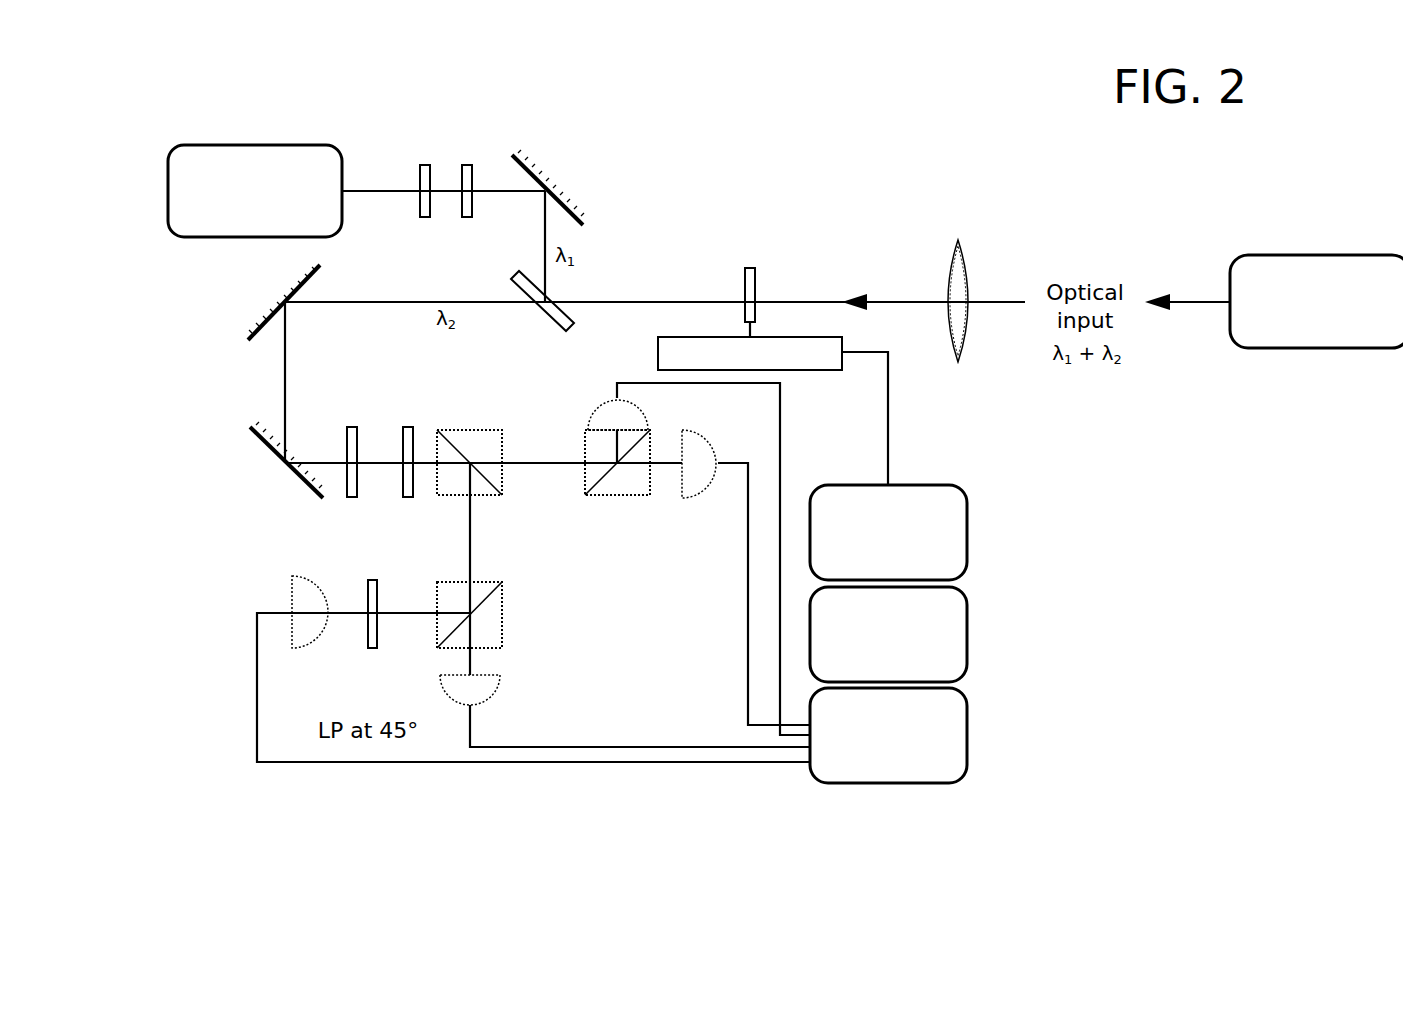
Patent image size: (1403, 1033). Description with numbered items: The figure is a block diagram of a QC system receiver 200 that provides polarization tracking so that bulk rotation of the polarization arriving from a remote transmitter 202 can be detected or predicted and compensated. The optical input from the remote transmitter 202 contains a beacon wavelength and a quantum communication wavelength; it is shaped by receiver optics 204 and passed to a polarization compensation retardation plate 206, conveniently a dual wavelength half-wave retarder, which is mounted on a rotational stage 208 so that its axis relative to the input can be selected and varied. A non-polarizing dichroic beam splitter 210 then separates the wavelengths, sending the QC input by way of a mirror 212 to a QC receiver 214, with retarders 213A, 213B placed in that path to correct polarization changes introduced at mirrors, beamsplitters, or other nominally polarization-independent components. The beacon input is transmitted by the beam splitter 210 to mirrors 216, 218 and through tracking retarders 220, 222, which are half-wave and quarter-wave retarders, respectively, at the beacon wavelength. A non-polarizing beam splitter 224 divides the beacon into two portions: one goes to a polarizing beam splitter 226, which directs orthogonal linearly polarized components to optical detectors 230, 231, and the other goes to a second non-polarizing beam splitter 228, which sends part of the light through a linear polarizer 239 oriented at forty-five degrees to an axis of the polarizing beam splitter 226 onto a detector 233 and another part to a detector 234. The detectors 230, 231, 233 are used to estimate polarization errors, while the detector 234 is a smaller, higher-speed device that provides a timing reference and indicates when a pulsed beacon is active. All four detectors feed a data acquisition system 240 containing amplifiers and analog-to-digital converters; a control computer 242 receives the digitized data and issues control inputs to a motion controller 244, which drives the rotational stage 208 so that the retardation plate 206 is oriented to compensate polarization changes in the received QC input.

The QC system receiver 200 is at (925, 130).
The remote transmitter 202 is at (1274, 301).
The receiver optics 204 is at (997, 291).
The polarization compensation retardation plate 206 is at (787, 277).
The rotational stage 208 is at (750, 383).
The non-polarizing dichroic beam splitter 210 is at (528, 323).
The mirror 212 is at (565, 178).
The retarder 213A is at (407, 195).
The retarder 213B is at (491, 205).
The QC receiver 214 is at (275, 172).
The mirror 216 is at (246, 302).
The mirror 218 is at (263, 460).
The tracking retarder 220 is at (353, 476).
The tracking retarder 222 is at (410, 476).
The non-polarizing beam splitter 224 is at (502, 439).
The polarizing beam splitter 226 is at (609, 508).
The non-polarizing beam splitter 228 is at (518, 636).
The optical detector 230 is at (650, 413).
The optical detector 231 is at (707, 497).
The detector 233 is at (265, 607).
The detector 234 is at (505, 705).
The linear polarizer 239 is at (340, 640).
The data acquisition system 240 is at (888, 735).
The control computer 242 is at (888, 634).
The motion controller 244 is at (888, 532).